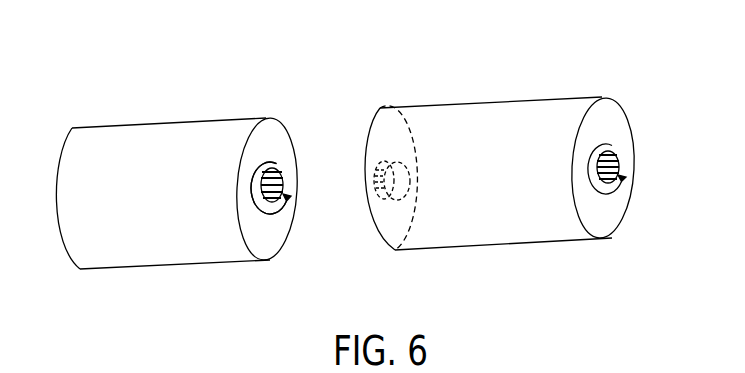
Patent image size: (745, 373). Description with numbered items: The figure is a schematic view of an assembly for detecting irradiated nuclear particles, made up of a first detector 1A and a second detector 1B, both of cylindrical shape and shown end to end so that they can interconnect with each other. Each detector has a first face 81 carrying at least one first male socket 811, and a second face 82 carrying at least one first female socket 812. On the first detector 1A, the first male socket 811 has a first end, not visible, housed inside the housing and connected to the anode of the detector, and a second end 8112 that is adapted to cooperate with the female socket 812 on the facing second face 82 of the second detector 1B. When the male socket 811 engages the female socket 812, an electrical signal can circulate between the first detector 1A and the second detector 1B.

The first detector 1A is at (75, 140).
The second detector 1B is at (540, 117).
The first face 81 is at (257, 136).
The first male socket 811 is at (272, 171).
The second end 8112 is at (279, 176).
The first female socket 812 is at (367, 208).
The second face 82 is at (383, 128).